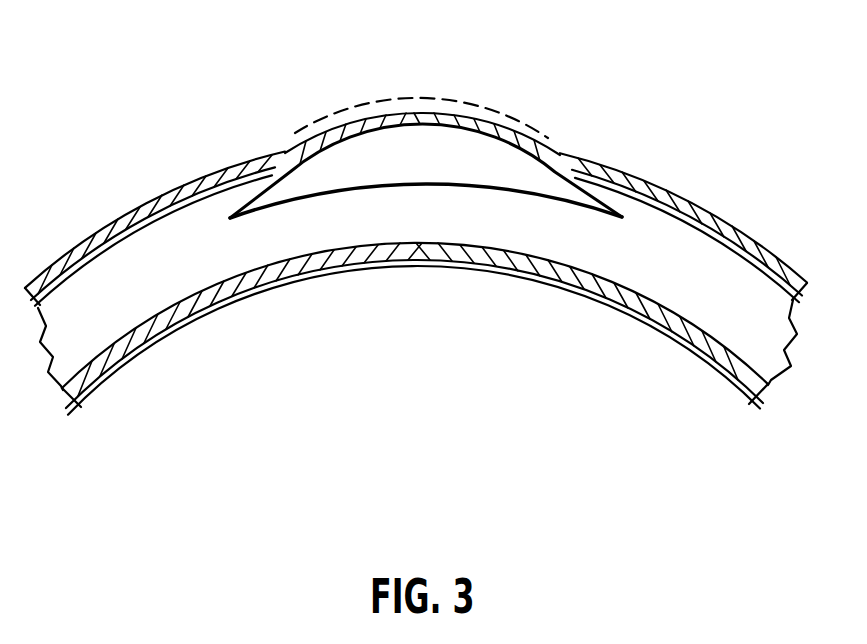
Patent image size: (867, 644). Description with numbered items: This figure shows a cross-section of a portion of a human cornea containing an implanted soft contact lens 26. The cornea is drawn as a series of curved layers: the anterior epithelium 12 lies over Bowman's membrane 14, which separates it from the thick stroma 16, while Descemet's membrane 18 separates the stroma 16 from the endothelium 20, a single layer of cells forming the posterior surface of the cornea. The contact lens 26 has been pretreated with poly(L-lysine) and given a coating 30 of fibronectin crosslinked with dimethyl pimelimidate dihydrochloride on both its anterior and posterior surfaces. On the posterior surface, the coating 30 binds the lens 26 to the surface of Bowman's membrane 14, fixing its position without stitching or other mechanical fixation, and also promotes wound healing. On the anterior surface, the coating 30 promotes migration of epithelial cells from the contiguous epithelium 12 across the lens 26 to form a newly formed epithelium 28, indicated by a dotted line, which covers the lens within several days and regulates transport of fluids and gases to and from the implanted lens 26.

The epithelium 12 is at (147, 215).
The Bowman's membrane 14 is at (60, 275).
The stroma 16 is at (590, 243).
The Descemet's membrane 18 is at (207, 297).
The endothelium 20 is at (320, 275).
The contact lens 26 is at (510, 150).
The newly formed epithelium 28 is at (384, 100).
The coating 30 is at (300, 147).